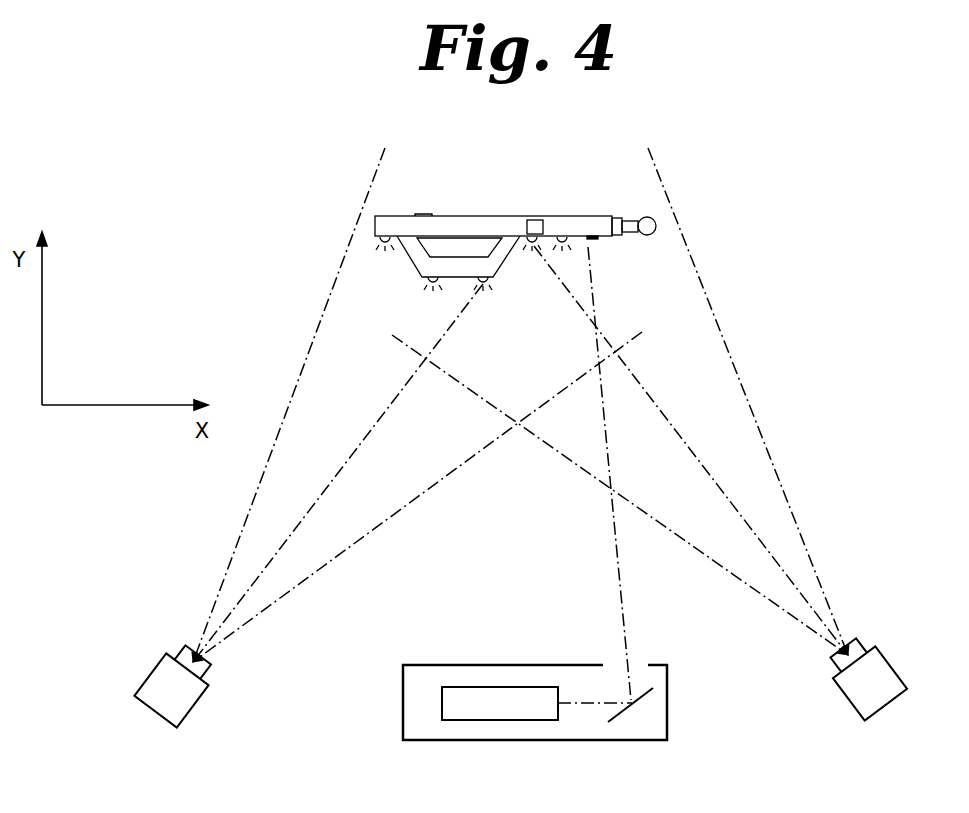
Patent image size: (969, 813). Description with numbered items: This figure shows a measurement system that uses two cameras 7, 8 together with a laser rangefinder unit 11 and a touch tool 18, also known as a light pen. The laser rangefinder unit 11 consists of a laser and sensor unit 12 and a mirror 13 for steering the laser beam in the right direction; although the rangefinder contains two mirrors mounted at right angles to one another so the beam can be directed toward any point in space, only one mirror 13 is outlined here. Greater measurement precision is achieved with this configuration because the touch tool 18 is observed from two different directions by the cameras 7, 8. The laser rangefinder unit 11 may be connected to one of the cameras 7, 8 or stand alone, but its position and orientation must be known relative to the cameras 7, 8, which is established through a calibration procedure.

The camera 7 is at (161, 704).
The camera 8 is at (862, 698).
The laser rangefinder unit 11 is at (434, 694).
The laser and sensor unit 12 is at (500, 703).
The mirror 13 is at (630, 712).
The touch tool 18 is at (454, 212).